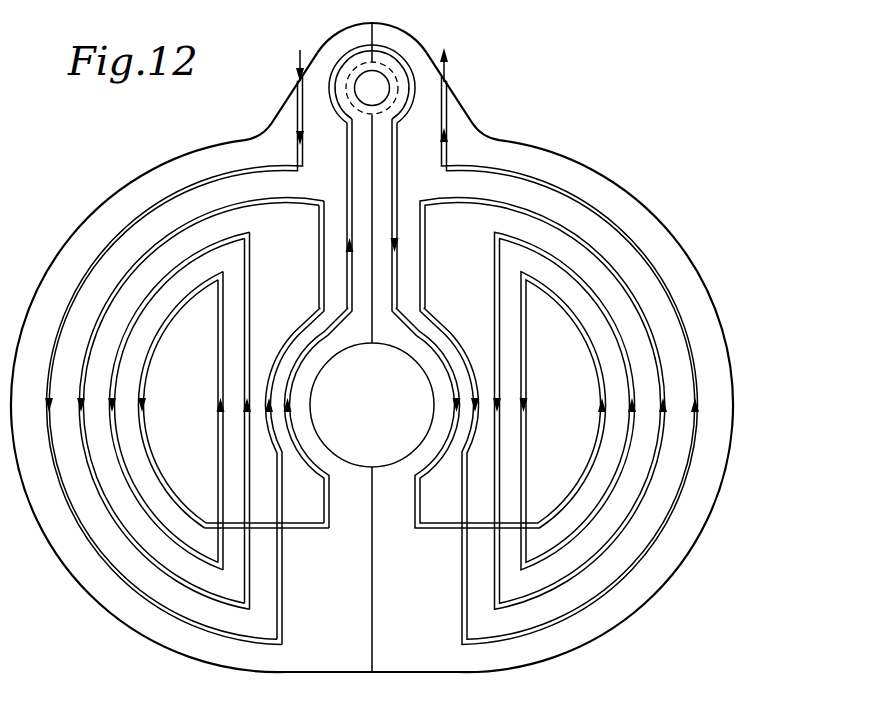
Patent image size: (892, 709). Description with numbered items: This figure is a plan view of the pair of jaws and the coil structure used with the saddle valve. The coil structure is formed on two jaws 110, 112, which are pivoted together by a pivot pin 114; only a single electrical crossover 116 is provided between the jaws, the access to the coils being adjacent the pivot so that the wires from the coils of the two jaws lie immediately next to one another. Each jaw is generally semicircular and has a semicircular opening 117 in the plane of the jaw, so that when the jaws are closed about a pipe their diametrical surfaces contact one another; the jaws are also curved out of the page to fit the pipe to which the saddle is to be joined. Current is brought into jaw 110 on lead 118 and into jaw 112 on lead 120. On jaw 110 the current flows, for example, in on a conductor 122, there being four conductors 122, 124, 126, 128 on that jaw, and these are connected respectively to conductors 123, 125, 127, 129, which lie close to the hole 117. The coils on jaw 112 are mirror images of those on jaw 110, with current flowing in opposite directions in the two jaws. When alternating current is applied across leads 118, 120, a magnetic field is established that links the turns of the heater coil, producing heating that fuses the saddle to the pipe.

The jaw 110 is at (352, 660).
The jaw 112 is at (415, 660).
The pivot pin 114 is at (378, 75).
The electrical crossover 116 is at (350, 48).
The semicircular opening 117 is at (387, 395).
The lead 118 is at (298, 62).
The lead 120 is at (448, 77).
The conductor 122 is at (148, 207).
The conductor 123 is at (282, 625).
The conductor 124 is at (132, 263).
The conductor 125 is at (252, 588).
The conductor 126 is at (138, 303).
The conductor 127 is at (219, 462).
The conductor 128 is at (157, 347).
The conductor 129 is at (330, 527).